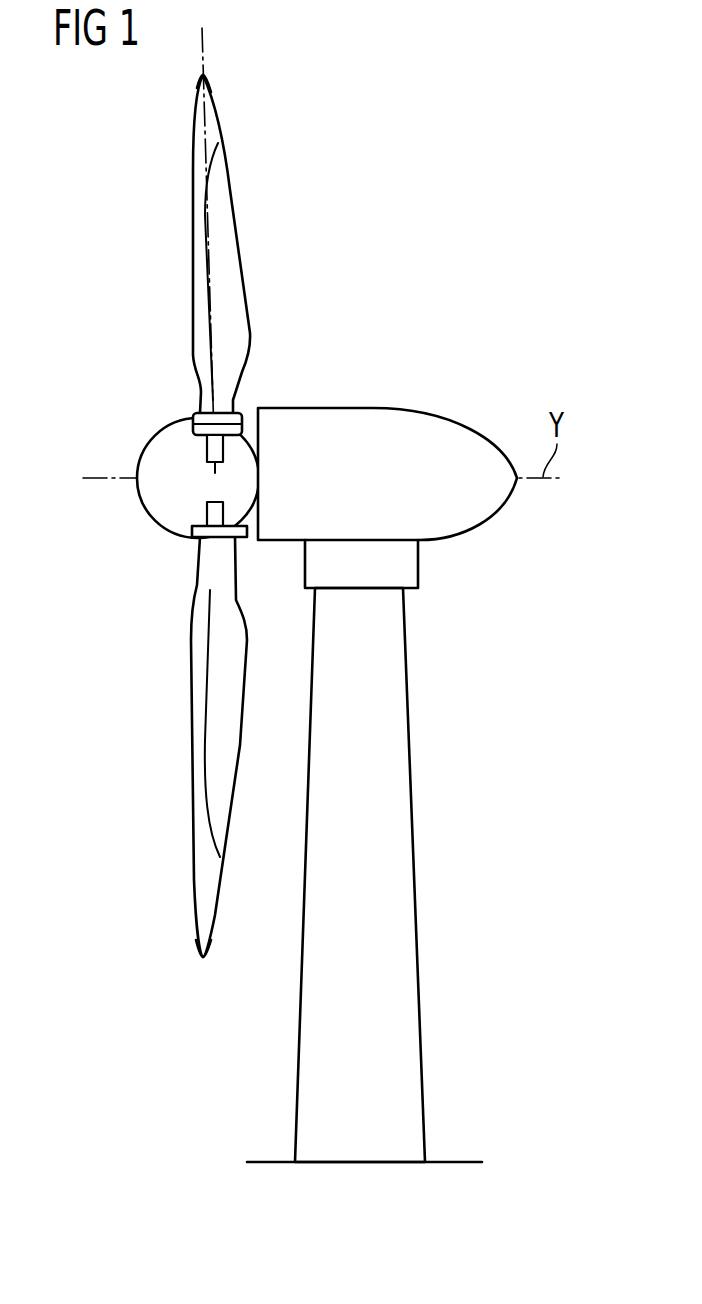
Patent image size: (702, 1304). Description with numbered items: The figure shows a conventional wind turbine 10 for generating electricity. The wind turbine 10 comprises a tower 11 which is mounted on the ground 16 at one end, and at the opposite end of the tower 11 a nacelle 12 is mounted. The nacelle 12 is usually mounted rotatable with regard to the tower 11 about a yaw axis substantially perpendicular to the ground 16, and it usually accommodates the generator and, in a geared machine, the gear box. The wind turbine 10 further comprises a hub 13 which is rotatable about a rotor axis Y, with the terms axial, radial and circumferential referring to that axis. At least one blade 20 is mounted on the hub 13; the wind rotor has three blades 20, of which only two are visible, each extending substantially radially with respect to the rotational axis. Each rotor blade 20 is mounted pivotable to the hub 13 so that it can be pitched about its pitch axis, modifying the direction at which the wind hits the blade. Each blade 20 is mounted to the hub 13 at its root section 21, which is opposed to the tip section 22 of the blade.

The wind turbine 10 is at (480, 290).
The tower 11 is at (405, 835).
The nacelle 12 is at (357, 407).
The hub 13 is at (113, 513).
The ground 16 is at (452, 1161).
The blade 20 is at (193, 240).
The root section 21 is at (225, 411).
The tip section 22 is at (206, 77).